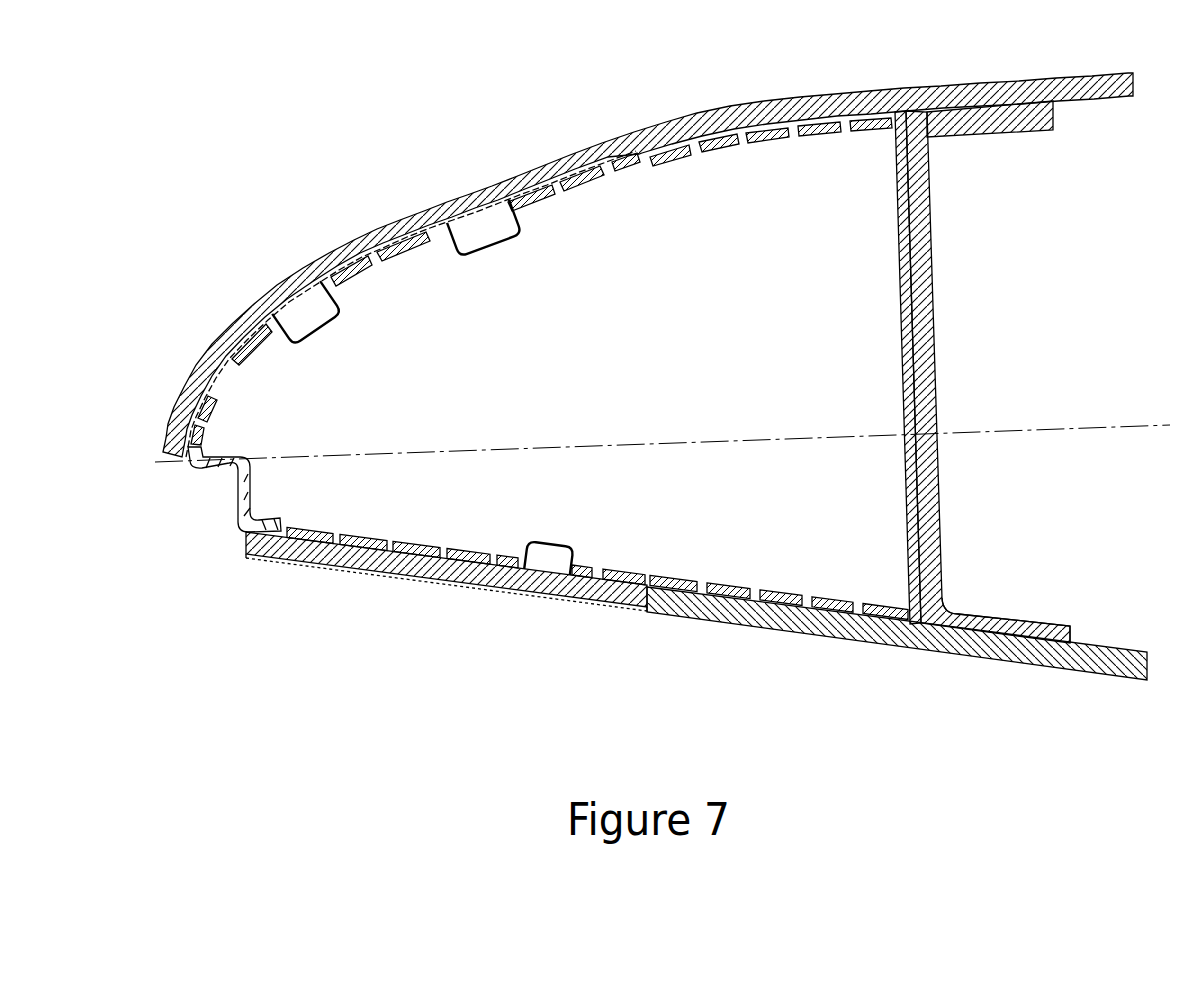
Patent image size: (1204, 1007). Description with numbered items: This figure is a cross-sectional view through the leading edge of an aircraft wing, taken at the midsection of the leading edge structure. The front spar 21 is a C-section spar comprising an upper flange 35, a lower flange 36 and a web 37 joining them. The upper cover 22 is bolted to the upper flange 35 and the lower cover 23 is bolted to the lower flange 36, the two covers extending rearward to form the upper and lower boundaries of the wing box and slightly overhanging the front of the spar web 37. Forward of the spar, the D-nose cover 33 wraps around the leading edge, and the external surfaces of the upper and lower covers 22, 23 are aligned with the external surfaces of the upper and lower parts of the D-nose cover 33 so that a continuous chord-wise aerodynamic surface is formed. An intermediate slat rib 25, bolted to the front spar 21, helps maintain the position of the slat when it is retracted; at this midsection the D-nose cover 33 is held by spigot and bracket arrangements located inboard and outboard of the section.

The front spar 21 is at (1088, 325).
The upper cover 22 is at (893, 90).
The lower cover 23 is at (890, 640).
The intermediate slat rib 25 is at (597, 183).
The D-nose cover 33 is at (313, 232).
The upper flange 35 is at (998, 120).
The lower flange 36 is at (1015, 627).
The web 37 is at (935, 338).